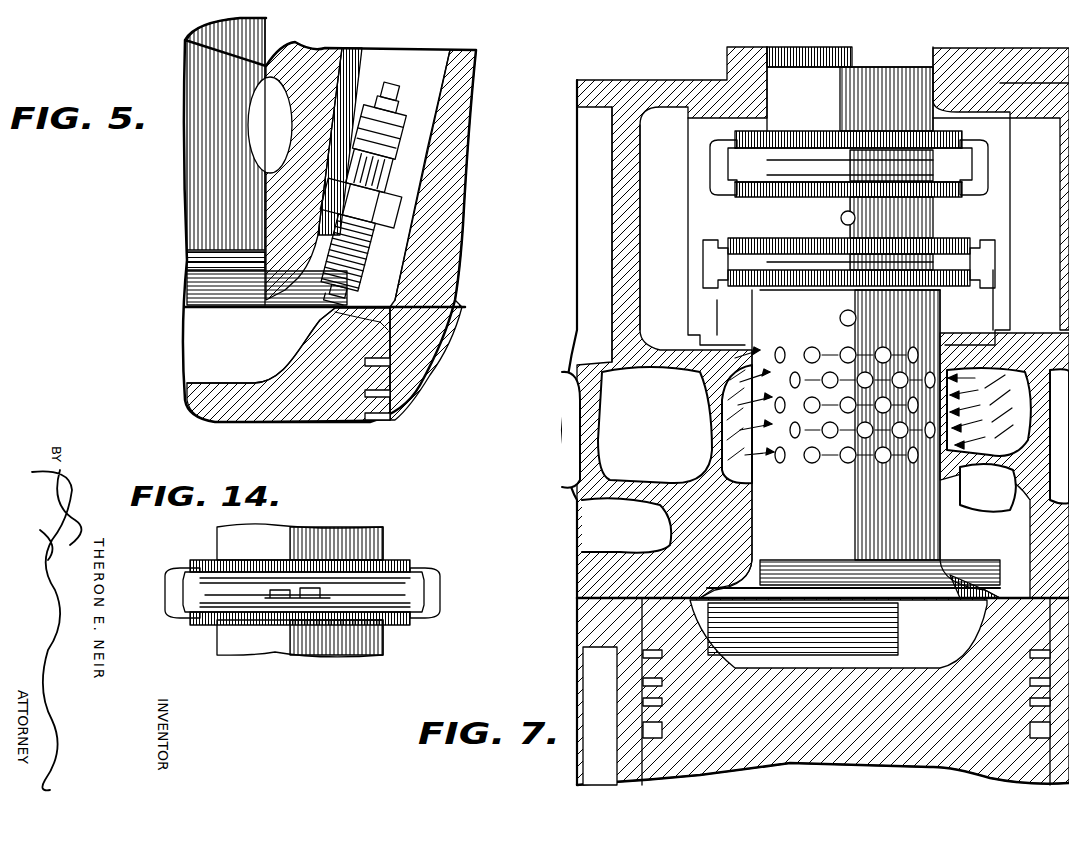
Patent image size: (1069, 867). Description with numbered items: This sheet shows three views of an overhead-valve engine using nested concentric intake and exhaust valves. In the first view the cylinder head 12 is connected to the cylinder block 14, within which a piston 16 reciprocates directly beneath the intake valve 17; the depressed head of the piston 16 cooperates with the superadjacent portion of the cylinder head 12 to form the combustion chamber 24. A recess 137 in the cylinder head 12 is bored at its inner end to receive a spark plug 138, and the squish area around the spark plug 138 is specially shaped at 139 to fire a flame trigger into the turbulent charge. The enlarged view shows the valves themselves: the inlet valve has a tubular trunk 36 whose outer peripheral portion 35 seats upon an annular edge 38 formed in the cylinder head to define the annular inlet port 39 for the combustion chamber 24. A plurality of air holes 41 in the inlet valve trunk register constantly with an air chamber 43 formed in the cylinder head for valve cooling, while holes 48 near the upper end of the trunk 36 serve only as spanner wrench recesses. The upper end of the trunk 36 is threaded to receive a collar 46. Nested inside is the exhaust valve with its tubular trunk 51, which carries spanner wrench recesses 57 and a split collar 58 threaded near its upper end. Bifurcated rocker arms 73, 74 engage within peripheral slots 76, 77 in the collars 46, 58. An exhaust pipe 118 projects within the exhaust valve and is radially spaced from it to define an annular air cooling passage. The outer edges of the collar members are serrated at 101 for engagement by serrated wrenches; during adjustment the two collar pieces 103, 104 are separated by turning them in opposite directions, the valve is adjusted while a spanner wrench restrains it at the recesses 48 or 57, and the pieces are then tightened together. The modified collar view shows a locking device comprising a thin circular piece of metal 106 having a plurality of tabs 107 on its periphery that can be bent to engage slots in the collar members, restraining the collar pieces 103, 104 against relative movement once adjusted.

In FIG. 5, the cylinder head 12 is at (472, 272).
In FIG. 5, the cylinder block 14 is at (417, 363).
In FIG. 5, the piston 16 is at (357, 412).
In FIG. 5, the intake valve 17 is at (192, 210).
In FIG. 5, the combustion chamber 24 is at (198, 337).
In FIG. 5, the air chamber 43 is at (278, 97).
In FIG. 7, the air chamber 43 is at (745, 405).
In FIG. 5, the recess 137 is at (428, 142).
In FIG. 5, the spark plug 138 is at (395, 183).
In FIG. 5, the squish area 139 is at (375, 325).
In FIG. 14, the serrations 101 is at (205, 566).
In FIG. 7, the serrations 101 is at (740, 140).
In FIG. 14, the collar piece 103 is at (402, 560).
In FIG. 14, the collar piece 104 is at (398, 628).
In FIG. 14, the thin circular piece of metal 106 is at (220, 585).
In FIG. 14, the tabs 107 is at (283, 600).
In FIG. 7, the exhaust pipe 118 is at (778, 88).
In FIG. 7, the peripheral slot 77 is at (802, 158).
In FIG. 7, the split collar 58 is at (960, 135).
In FIG. 7, the bifurcated arm 74 is at (978, 175).
In FIG. 7, the exhaust valve trunk 51 is at (770, 210).
In FIG. 7, the spanner wrench recesses 57 is at (842, 222).
In FIG. 7, the peripheral slot 76 is at (812, 262).
In FIG. 7, the collar 46 is at (946, 244).
In FIG. 7, the bifurcated arm 73 is at (988, 306).
In FIG. 7, the inlet valve trunk 36 is at (765, 314).
In FIG. 7, the holes 48 is at (842, 317).
In FIG. 7, the air holes 41 is at (818, 352).
In FIG. 7, the annular inlet port 39 is at (968, 578).
In FIG. 7, the outer peripheral portion 35 is at (808, 585).
In FIG. 7, the annular edge 38 is at (1000, 600).